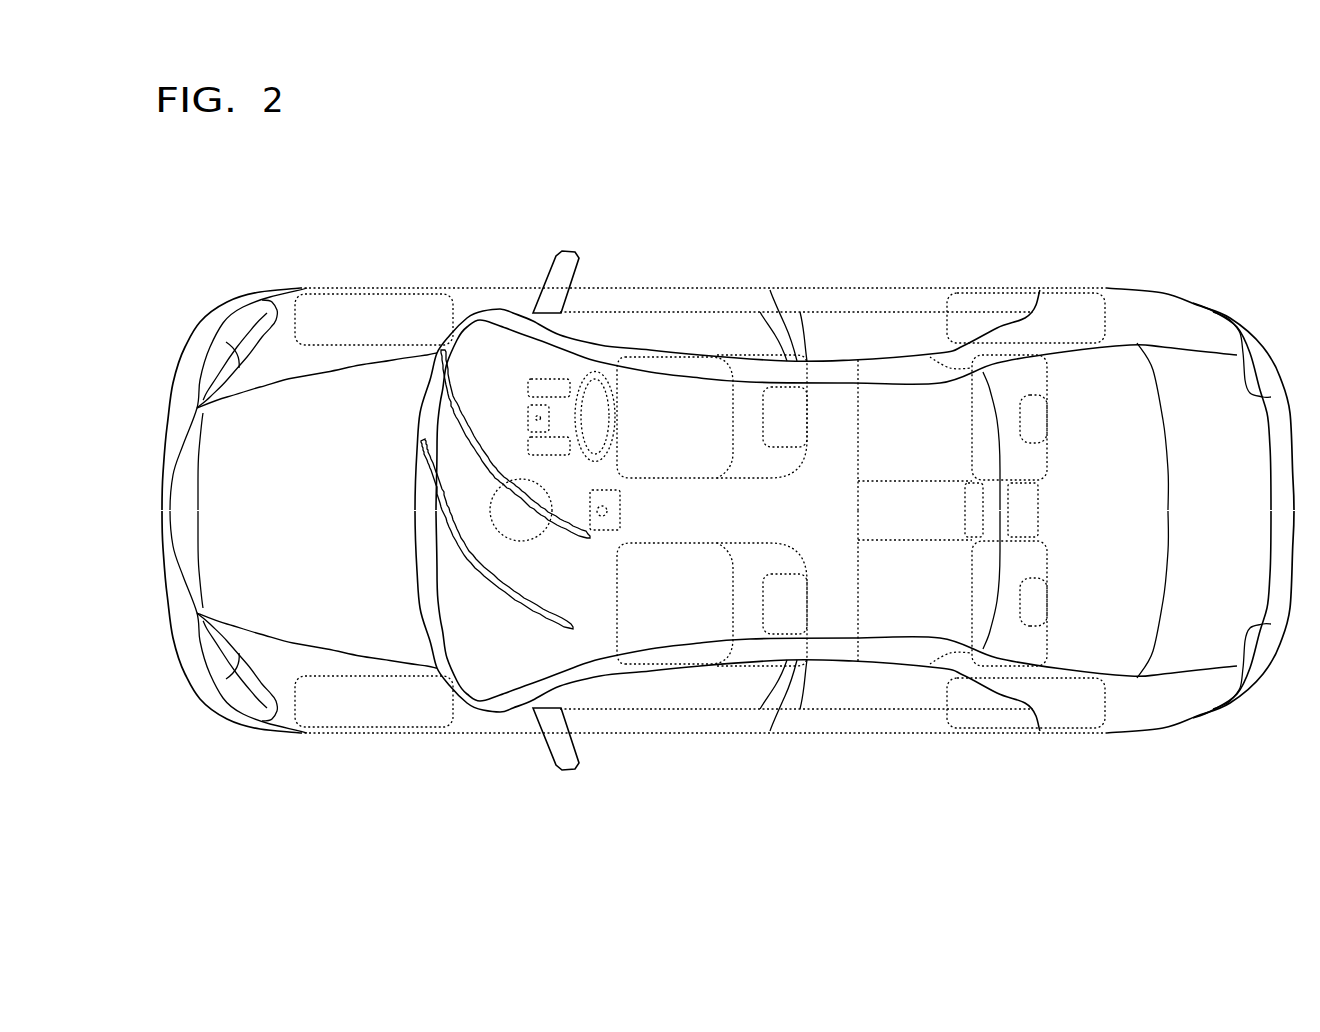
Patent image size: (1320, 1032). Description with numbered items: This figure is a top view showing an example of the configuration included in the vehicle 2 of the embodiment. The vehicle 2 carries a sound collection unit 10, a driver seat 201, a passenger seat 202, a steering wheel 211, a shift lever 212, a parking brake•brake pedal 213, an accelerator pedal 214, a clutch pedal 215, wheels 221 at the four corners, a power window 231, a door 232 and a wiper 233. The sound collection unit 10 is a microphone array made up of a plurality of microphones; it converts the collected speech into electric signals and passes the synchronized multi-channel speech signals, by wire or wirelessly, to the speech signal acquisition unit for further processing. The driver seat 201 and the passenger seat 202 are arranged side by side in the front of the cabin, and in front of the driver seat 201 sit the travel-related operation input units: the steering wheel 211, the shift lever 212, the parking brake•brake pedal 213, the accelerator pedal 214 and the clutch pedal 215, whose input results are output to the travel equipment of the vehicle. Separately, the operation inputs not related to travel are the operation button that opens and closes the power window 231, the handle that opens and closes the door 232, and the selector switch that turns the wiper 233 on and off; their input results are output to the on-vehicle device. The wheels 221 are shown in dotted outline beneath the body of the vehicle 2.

The vehicle 2 is at (1229, 179).
The sound collection unit 10 is at (522, 541).
The driver seat 201 is at (703, 407).
The passenger seat 202 is at (678, 603).
The steering wheel 211 is at (599, 373).
The shift lever 212 is at (600, 530).
The parking brake•brake pedal 213 is at (549, 380).
The accelerator pedal 214 is at (528, 416).
The clutch pedal 215 is at (565, 438).
The wheel 221 is at (373, 317).
The power window 231 is at (677, 333).
The door 232 is at (648, 298).
The wiper 233 is at (470, 553).